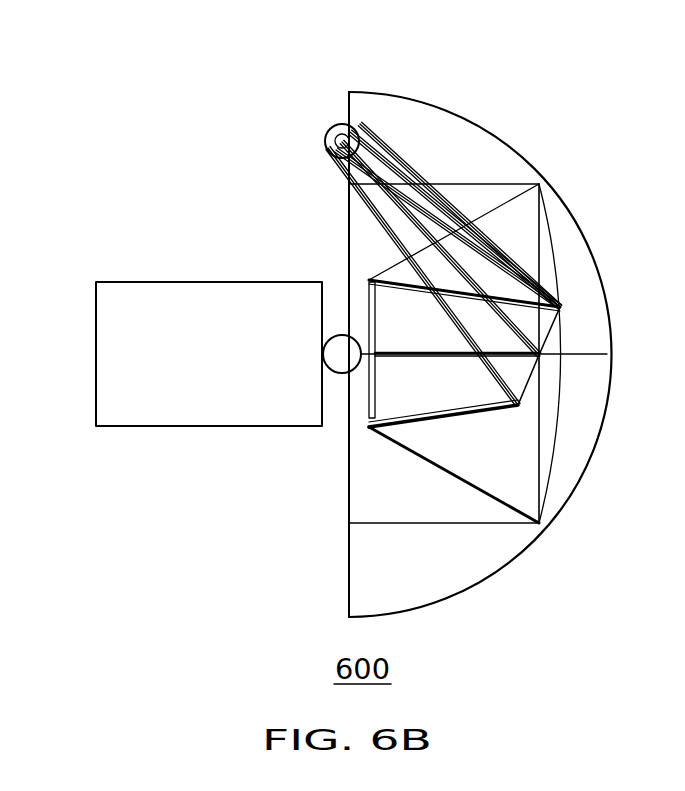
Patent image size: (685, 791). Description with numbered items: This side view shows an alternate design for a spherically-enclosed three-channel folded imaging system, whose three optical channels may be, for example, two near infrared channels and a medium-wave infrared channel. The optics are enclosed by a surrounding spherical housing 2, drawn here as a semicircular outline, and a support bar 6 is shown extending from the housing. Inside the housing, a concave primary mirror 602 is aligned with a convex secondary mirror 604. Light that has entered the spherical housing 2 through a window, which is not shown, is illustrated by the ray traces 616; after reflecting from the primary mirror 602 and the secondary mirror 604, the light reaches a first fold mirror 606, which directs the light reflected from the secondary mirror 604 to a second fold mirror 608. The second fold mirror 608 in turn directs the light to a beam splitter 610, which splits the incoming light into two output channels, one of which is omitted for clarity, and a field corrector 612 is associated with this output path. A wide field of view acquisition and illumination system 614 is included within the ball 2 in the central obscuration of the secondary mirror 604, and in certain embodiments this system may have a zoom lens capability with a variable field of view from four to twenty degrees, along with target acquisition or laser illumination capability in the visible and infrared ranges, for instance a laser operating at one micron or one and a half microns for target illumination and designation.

The spherical housing 2 is at (489, 131).
The support bar 6 is at (332, 354).
The concave primary mirror 602 is at (565, 382).
The convex secondary mirror 604 is at (378, 377).
The first fold mirror 606 is at (520, 405).
The second fold mirror 608 is at (329, 131).
The beam splitter 610 is at (341, 124).
The field corrector 612 is at (338, 145).
The wide field of view acquisition and illumination system 614 is at (127, 282).
The ray traces 616 is at (458, 184).